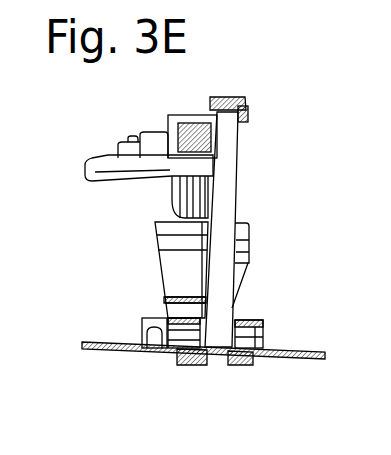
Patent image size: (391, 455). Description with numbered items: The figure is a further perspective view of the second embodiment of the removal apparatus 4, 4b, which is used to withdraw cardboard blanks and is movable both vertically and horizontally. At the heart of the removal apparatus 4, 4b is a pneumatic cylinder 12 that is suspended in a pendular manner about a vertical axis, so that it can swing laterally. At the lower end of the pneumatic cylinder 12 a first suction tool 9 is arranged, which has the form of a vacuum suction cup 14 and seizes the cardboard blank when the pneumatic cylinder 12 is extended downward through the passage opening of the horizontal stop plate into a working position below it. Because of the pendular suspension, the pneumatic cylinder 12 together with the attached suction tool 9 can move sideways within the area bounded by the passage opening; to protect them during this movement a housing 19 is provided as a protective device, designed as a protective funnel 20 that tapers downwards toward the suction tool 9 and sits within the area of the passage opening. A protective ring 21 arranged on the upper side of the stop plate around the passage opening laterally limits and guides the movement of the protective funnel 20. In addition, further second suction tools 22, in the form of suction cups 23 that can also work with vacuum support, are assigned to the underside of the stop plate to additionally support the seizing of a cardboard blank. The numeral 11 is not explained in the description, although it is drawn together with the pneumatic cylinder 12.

The removal apparatus 4 is at (121, 150).
The removal apparatus 4b is at (99, 120).
The first suction tool 9 is at (203, 371).
The vacuum suction cup 14 is at (186, 364).
The support column 11 is at (224, 196).
The pneumatic cylinder 12 is at (200, 200).
The housing 19 is at (303, 249).
The protective funnel 20 is at (250, 263).
The protective ring 21 is at (258, 326).
The second suction tool 22 is at (275, 376).
The suction cup 23 is at (240, 364).